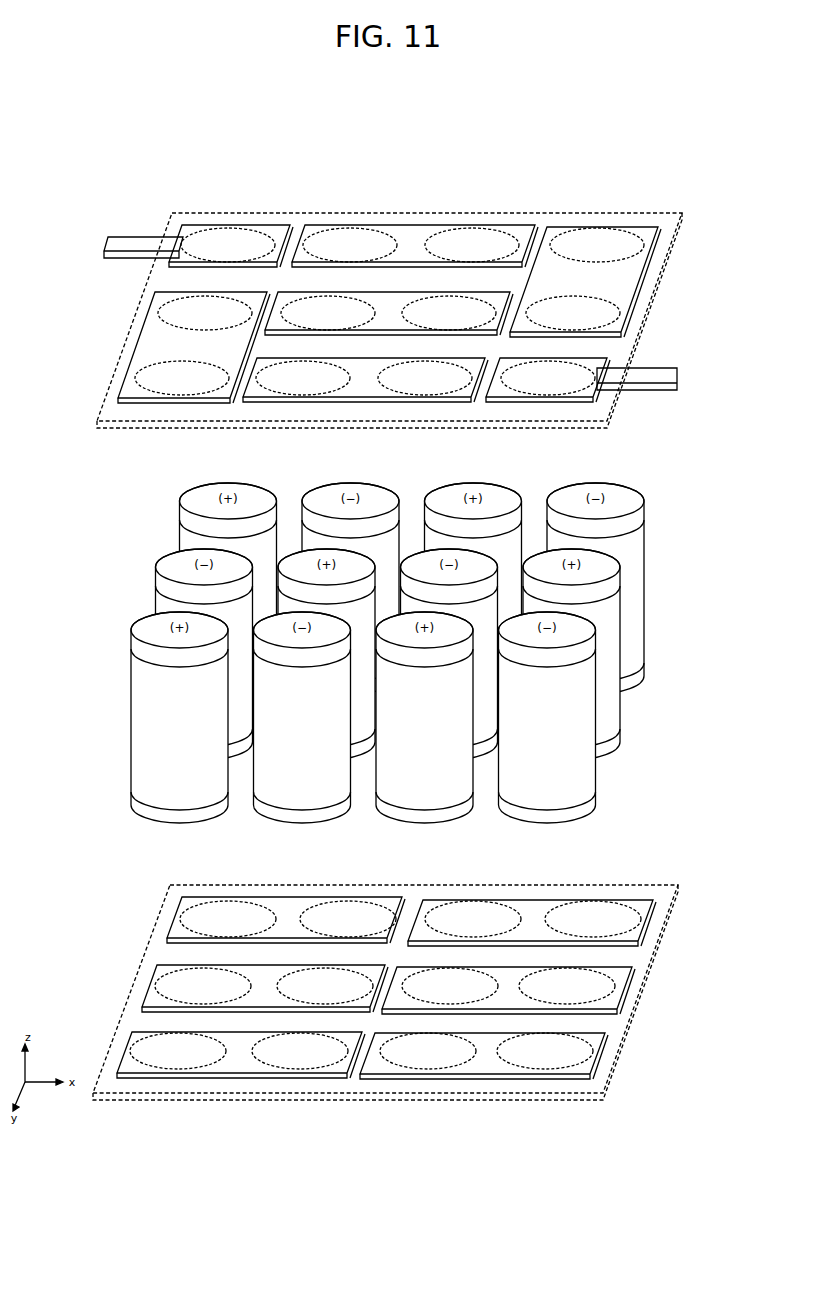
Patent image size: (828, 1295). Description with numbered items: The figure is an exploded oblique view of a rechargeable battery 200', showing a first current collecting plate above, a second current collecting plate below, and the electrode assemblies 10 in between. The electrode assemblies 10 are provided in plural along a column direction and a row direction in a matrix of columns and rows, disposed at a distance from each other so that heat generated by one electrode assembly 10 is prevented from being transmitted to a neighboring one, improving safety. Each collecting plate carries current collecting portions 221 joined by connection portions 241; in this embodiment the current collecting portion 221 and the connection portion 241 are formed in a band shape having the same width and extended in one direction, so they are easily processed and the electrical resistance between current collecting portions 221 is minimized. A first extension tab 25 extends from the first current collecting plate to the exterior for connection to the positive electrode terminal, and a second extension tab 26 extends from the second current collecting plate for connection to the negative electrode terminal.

The rechargeable battery 200' is at (387, 609).
The electrode assembly 10 is at (645, 575).
The first extension tab 25 is at (104, 241).
The second extension tab 26 is at (678, 378).
The current collecting portion 221 is at (229, 240).
The connection portion 241 is at (411, 243).